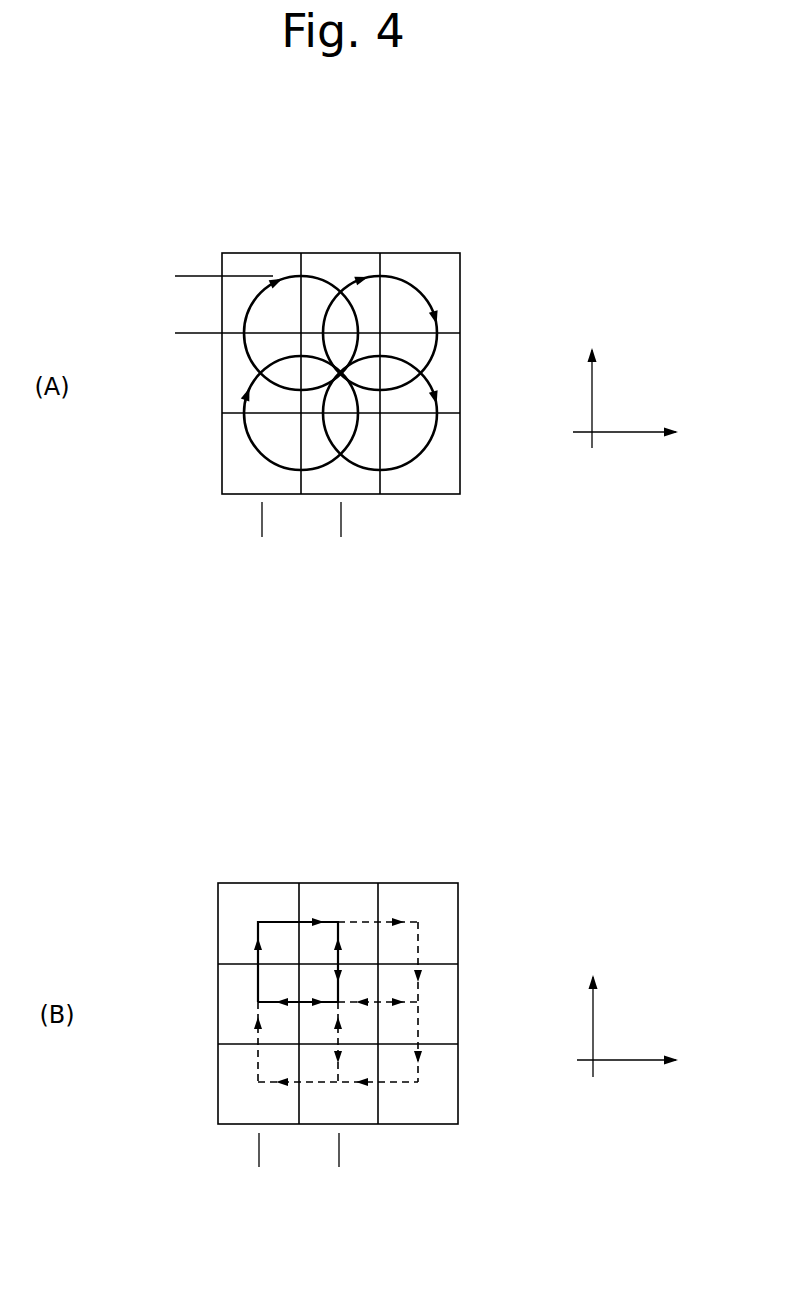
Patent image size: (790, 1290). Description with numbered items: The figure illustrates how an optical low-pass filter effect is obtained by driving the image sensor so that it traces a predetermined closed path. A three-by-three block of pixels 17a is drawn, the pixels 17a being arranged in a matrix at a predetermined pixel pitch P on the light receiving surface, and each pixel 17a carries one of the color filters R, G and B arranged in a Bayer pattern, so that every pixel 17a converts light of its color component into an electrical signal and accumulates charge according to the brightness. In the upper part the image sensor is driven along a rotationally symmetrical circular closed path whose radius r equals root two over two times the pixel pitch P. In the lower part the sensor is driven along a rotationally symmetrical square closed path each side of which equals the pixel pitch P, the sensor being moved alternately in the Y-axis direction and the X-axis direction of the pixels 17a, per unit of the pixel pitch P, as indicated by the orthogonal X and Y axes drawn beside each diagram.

The pixel 17a is at (262, 253).
The pixel pitch P is at (264, 520).
The radius r is at (190, 278).
The color filter R is at (333, 668).
The color filter G is at (339, 688).
The color filter B is at (332, 688).
The X-axis X is at (637, 747).
The Y-axis Y is at (592, 697).